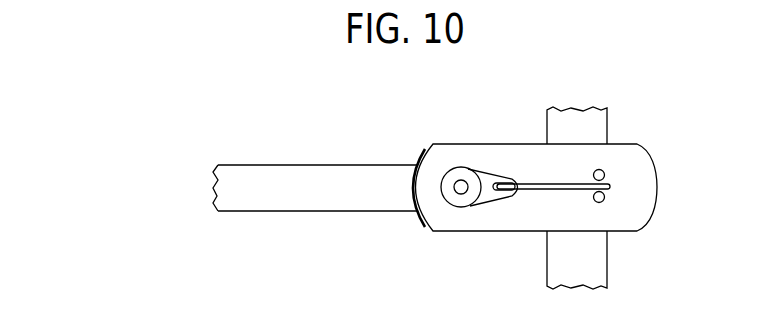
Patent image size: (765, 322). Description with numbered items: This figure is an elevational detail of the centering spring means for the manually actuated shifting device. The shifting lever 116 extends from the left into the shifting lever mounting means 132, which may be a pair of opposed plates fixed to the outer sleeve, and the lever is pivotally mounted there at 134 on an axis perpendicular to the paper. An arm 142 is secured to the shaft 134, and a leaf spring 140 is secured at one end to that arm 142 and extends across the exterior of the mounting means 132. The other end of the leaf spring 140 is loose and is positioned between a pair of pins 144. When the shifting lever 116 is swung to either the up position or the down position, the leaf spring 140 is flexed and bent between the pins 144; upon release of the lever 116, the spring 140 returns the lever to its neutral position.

The shifting lever 116 is at (312, 213).
The shifting lever mounting means 132 is at (449, 141).
The pivot shaft 134 is at (460, 191).
The leaf spring 140 is at (535, 192).
The arm 142 is at (492, 165).
The pins 144 is at (605, 197).